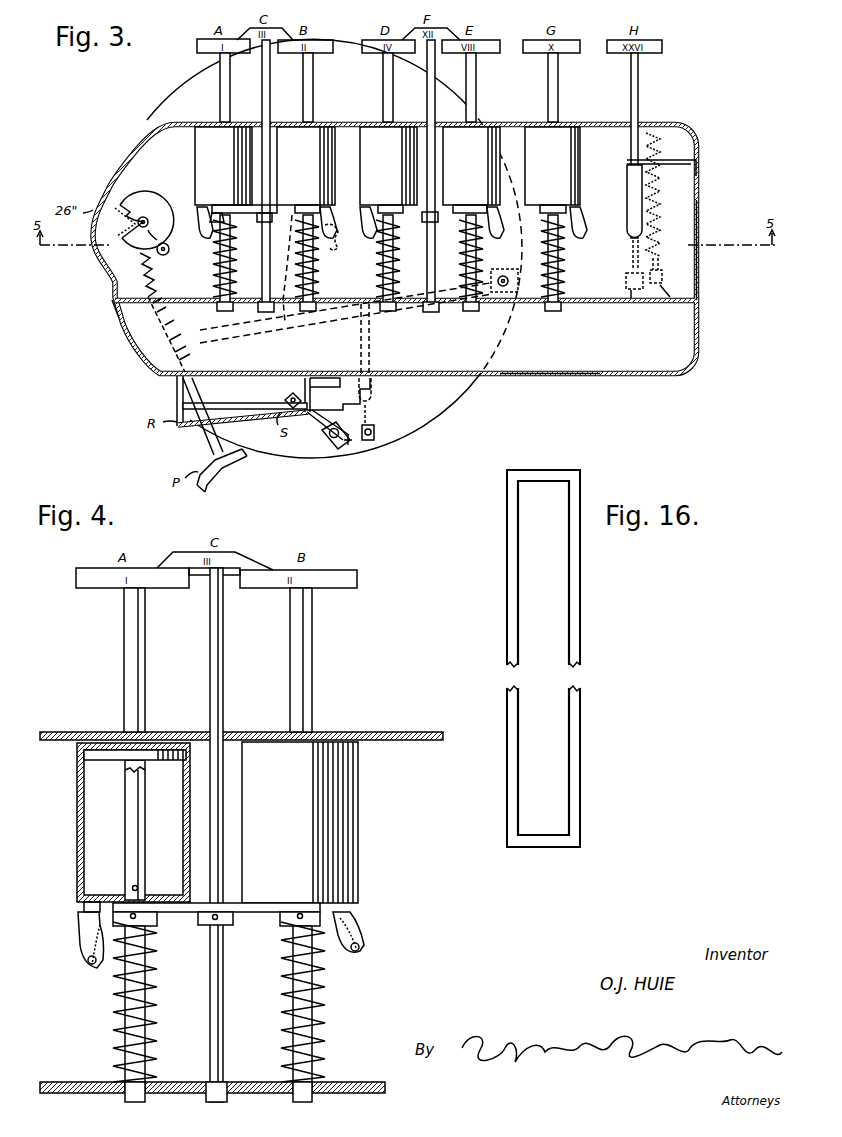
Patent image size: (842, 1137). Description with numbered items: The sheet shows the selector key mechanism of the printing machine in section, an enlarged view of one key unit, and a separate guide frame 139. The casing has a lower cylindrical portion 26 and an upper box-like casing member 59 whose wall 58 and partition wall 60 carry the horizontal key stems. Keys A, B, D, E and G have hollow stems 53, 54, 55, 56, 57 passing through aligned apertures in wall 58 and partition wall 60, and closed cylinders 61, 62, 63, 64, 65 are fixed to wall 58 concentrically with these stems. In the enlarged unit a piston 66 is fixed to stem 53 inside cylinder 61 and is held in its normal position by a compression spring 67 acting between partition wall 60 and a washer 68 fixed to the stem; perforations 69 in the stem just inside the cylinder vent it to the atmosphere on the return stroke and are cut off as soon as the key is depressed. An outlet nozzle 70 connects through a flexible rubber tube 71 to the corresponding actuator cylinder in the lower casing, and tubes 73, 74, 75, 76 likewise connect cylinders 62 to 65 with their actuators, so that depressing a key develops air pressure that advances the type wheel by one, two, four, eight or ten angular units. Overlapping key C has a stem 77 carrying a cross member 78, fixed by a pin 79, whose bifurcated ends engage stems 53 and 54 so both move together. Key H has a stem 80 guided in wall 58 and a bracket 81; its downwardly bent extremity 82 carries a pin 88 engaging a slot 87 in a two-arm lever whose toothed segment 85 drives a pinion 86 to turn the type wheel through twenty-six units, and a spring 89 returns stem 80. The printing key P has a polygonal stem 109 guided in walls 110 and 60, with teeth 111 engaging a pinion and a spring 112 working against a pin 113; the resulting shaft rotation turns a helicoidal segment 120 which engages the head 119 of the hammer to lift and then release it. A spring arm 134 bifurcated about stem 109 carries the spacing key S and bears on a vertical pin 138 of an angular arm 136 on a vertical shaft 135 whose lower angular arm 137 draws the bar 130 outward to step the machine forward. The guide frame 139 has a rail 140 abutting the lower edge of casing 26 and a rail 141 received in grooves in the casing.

In FIG. 3, the cylindrical casing portion 26 is at (405, 437).
In FIG. 3, the key stem 53 is at (224, 92).
In FIG. 4, the key stem 53 is at (133, 693).
In FIG. 3, the key stem 54 is at (307, 92).
In FIG. 4, the key stem 54 is at (298, 678).
In FIG. 3, the key stem 55 is at (390, 90).
In FIG. 3, the key stem 56 is at (477, 90).
In FIG. 3, the key stem 57 is at (557, 90).
In FIG. 3, the wall 58 is at (197, 122).
In FIG. 4, the wall 58 is at (414, 757).
In FIG. 3, the upper casing member 59 is at (699, 210).
In FIG. 3, the partition wall 60 is at (580, 303).
In FIG. 4, the partition wall 60 is at (362, 1090).
In FIG. 3, the closed cylinder 61 is at (207, 172).
In FIG. 4, the closed cylinder 61 is at (82, 815).
In FIG. 3, the cylinder 62 is at (325, 167).
In FIG. 4, the cylinder 62 is at (349, 826).
In FIG. 3, the cylinder 63 is at (368, 183).
In FIG. 3, the cylinder 64 is at (490, 160).
In FIG. 3, the cylinder 65 is at (574, 160).
In FIG. 4, the piston 66 is at (90, 752).
In FIG. 3, the compression spring 67 is at (240, 262).
In FIG. 4, the compression spring 67 is at (156, 982).
In FIG. 3, the washer 68 is at (237, 226).
In FIG. 4, the washer 68 is at (150, 925).
In FIG. 4, the perforations 69 is at (139, 887).
In FIG. 4, the outlet nozzle 70 is at (80, 904).
In FIG. 3, the flexible tube 71 is at (175, 250).
In FIG. 4, the flexible tube 71 is at (81, 952).
In FIG. 3, the tube 73 is at (334, 223).
In FIG. 4, the tube 73 is at (364, 940).
In FIG. 3, the tube 74 is at (362, 232).
In FIG. 3, the tube 75 is at (502, 249).
In FIG. 3, the tube 76 is at (585, 228).
In FIG. 3, the key stem 77 is at (268, 90).
In FIG. 4, the key stem 77 is at (218, 688).
In FIG. 4, the cross member 78 is at (237, 915).
In FIG. 4, the pin 79 is at (213, 922).
In FIG. 3, the key stem 80 is at (637, 90).
In FIG. 3, the bracket 81 is at (661, 200).
In FIG. 3, the extremity 82 is at (635, 303).
In FIG. 3, the toothed segment 85 is at (272, 310).
In FIG. 3, the pinion 86 is at (339, 237).
In FIG. 3, the slot 87 is at (663, 302).
In FIG. 3, the pin 88 is at (635, 283).
In FIG. 3, the spring 89 is at (650, 245).
In FIG. 3, the key stem 109 is at (131, 342).
In FIG. 3, the wall 110 is at (549, 376).
In FIG. 3, the teeth 111 is at (158, 282).
In FIG. 3, the spring 112 is at (172, 320).
In FIG. 3, the pin 113 is at (184, 356).
In FIG. 3, the hammer head 119 is at (173, 231).
In FIG. 3, the helicoidal segment 120 is at (157, 212).
In FIG. 3, the bar 130 is at (372, 355).
In FIG. 3, the spring arm 134 is at (232, 405).
In FIG. 3, the vertical shaft 135 is at (374, 414).
In FIG. 3, the angular arm 136 is at (320, 442).
In FIG. 3, the angular arm 137 is at (350, 447).
In FIG. 3, the vertical pin 138 is at (285, 398).
In FIG. 16, the guide frame 139 is at (542, 472).
In FIG. 16, the rail 140 is at (511, 583).
In FIG. 16, the rail 141 is at (570, 582).